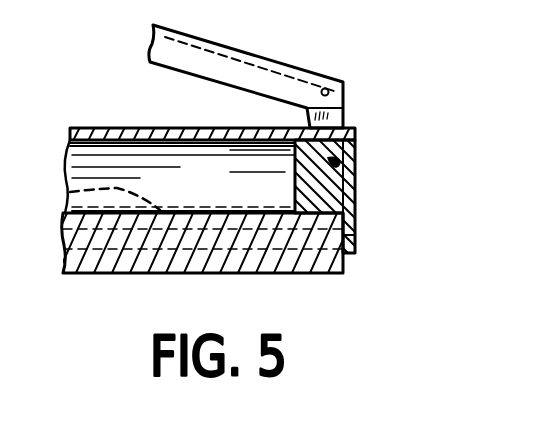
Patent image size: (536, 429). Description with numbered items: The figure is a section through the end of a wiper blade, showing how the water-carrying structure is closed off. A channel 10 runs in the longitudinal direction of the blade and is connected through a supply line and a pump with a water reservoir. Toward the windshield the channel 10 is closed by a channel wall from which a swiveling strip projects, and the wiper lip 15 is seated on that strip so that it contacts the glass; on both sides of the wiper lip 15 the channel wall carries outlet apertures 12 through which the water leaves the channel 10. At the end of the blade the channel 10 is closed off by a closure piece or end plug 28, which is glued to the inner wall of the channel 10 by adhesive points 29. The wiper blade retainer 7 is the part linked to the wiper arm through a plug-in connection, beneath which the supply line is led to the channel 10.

The wiper blade retainer 7 is at (237, 63).
The channel 10 is at (117, 153).
The outlet apertures 12 is at (64, 192).
The wiper lip 15 is at (175, 263).
The adhesive points 29 is at (355, 196).
The end plug 28 is at (356, 243).